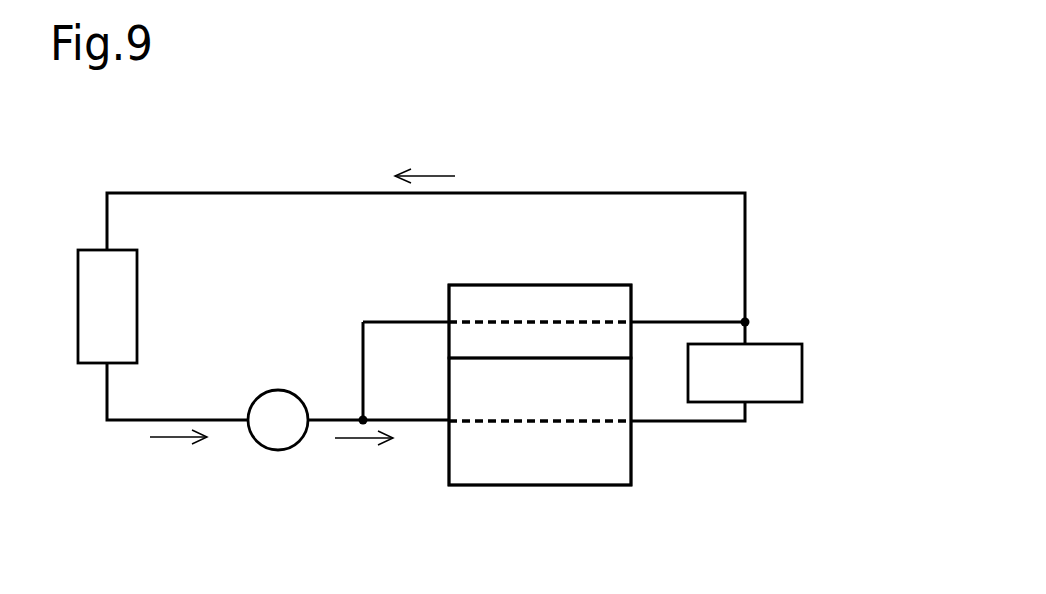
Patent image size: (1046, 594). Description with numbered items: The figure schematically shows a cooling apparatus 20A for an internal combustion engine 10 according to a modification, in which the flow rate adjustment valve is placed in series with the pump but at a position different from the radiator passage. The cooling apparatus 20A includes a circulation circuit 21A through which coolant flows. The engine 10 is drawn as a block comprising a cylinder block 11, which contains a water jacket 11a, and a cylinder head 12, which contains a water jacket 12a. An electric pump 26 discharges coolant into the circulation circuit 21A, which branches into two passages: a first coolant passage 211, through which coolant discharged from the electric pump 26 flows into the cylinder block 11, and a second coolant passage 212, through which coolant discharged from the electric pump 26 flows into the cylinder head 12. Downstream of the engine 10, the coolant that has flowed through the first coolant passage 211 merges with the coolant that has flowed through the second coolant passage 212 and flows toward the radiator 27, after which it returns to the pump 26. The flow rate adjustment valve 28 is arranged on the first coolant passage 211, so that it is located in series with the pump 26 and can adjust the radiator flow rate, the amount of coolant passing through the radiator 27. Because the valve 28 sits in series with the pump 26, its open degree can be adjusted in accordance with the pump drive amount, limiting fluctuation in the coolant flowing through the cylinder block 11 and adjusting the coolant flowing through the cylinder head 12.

The internal combustion engine 10 is at (420, 260).
The cylinder block 11 is at (446, 383).
The water jacket 11a is at (551, 423).
The cylinder head 12 is at (446, 294).
The water jacket 12a is at (536, 320).
The cooling apparatus 20A is at (773, 166).
The circulation circuit 21A is at (690, 192).
The first coolant passage 211 is at (688, 425).
The second coolant passage 212 is at (690, 321).
The electric pump 26 is at (277, 450).
The radiator 27 is at (138, 307).
The flow rate adjustment valve 28 is at (804, 372).